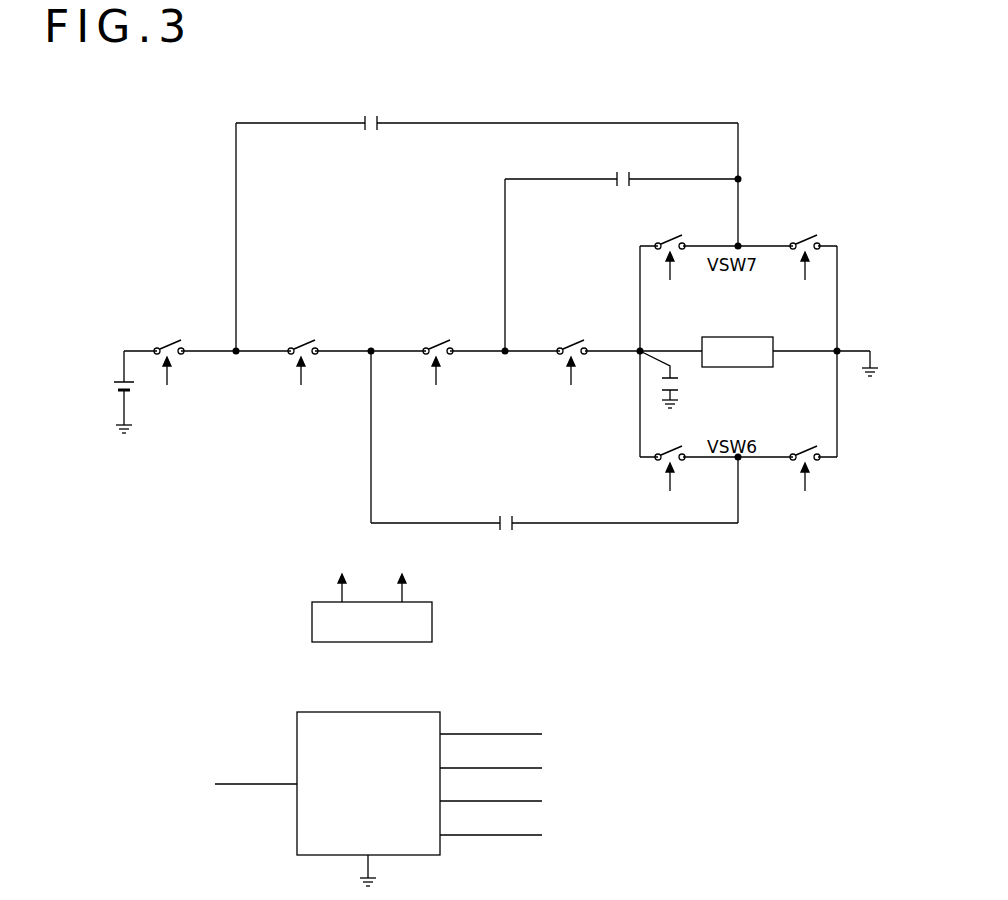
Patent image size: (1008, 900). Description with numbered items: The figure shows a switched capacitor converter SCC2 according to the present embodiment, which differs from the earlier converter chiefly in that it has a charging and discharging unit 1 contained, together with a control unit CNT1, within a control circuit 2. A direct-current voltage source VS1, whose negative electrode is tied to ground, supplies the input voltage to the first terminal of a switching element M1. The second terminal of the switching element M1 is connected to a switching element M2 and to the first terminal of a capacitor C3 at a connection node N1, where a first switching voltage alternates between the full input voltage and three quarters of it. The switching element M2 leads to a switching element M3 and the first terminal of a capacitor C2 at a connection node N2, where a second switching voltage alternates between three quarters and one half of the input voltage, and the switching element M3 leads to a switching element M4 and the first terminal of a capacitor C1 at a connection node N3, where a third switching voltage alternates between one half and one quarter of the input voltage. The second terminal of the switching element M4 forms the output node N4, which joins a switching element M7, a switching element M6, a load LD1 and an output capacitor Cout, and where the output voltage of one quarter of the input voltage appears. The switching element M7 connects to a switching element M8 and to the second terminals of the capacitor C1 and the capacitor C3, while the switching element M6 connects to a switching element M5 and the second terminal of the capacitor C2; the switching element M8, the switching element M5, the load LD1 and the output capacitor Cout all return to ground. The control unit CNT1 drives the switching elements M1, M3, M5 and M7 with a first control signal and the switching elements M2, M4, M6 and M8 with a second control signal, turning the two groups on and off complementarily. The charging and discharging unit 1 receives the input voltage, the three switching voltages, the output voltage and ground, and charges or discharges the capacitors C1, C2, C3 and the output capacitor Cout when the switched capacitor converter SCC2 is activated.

The switched capacitor converter SCC2 is at (664, 41).
The direct-current voltage source VS1 is at (112, 392).
The switching element M1 is at (172, 338).
The switching element M2 is at (306, 338).
The switching element M3 is at (441, 338).
The switching element M4 is at (575, 338).
The switching element M5 is at (807, 447).
The switching element M6 is at (672, 447).
The switching element M7 is at (672, 238).
The switching element M8 is at (807, 238).
The connection node N1 is at (234, 350).
The connection node N2 is at (374, 355).
The connection node N3 is at (503, 350).
The fourth node N4 is at (638, 350).
The capacitor C1 is at (623, 172).
The capacitor C2 is at (506, 516).
The capacitor C3 is at (372, 116).
The output capacitor Cout is at (674, 384).
The load LD1 is at (738, 336).
The control unit CNT1 is at (365, 643).
The charging and discharging unit 1 is at (369, 712).
The control circuit 2 is at (378, 720).